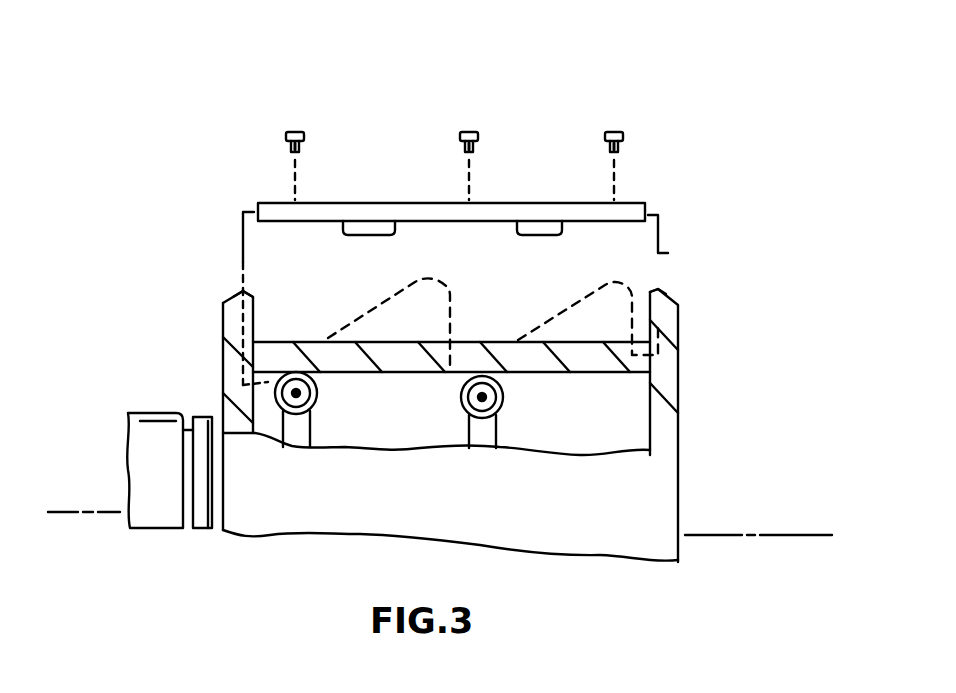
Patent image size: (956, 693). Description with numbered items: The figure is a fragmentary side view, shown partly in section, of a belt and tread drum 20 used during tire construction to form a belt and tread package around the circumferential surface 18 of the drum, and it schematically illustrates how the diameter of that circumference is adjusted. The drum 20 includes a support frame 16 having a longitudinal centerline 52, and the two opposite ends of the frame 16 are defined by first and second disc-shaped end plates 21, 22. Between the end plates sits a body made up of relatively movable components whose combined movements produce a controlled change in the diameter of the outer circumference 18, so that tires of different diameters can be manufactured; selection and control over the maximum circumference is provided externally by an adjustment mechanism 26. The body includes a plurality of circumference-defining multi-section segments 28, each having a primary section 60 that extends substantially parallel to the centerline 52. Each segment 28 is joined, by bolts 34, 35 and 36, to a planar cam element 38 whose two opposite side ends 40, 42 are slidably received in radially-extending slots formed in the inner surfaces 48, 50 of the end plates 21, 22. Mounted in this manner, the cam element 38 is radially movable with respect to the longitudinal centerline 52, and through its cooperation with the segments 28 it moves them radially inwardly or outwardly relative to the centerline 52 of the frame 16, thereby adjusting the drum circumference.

The support frame 16 is at (225, 404).
The circumferential surface 18 is at (632, 203).
The belt and tread drum 20 is at (598, 124).
The first end plate 21 is at (223, 375).
The second end plate 22 is at (680, 422).
The adjustment mechanism 26 is at (148, 516).
The multi-section segment 28 is at (346, 203).
The bolt 34 is at (295, 130).
The bolt 35 is at (469, 130).
The bolt 36 is at (614, 131).
The planar cam element 38 is at (523, 284).
The side end of cam element 40 is at (243, 253).
The side end of cam element 42 is at (668, 252).
The inner surface of first end plate 48 is at (262, 303).
The inner surface of second end plate 50 is at (648, 308).
The longitudinal centerline 52 is at (770, 535).
The primary section 60 is at (517, 203).